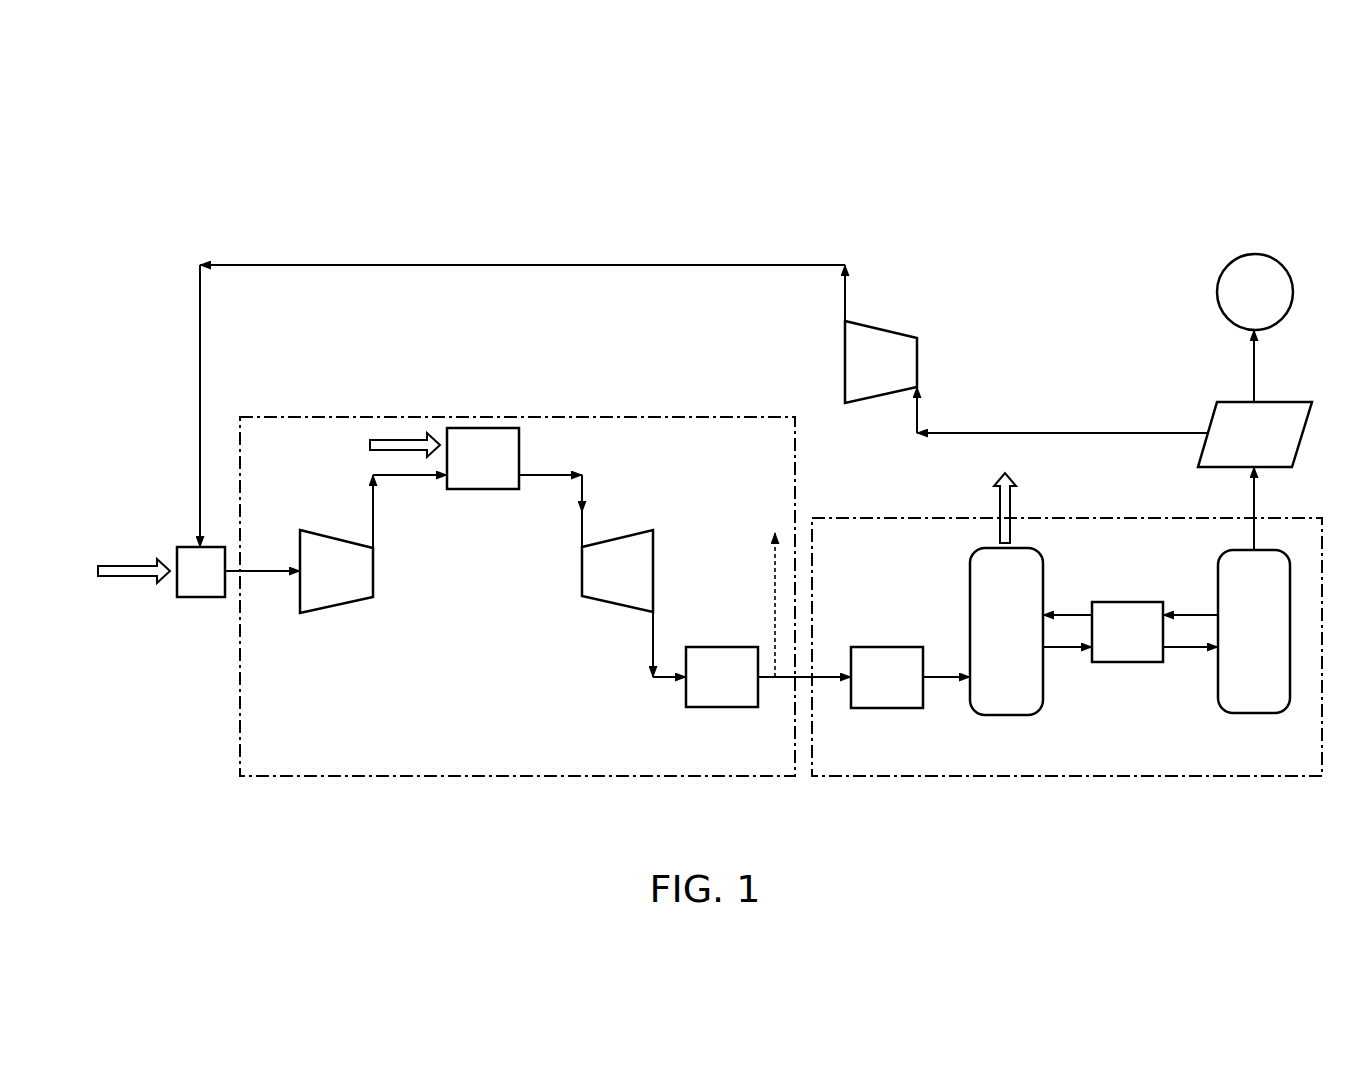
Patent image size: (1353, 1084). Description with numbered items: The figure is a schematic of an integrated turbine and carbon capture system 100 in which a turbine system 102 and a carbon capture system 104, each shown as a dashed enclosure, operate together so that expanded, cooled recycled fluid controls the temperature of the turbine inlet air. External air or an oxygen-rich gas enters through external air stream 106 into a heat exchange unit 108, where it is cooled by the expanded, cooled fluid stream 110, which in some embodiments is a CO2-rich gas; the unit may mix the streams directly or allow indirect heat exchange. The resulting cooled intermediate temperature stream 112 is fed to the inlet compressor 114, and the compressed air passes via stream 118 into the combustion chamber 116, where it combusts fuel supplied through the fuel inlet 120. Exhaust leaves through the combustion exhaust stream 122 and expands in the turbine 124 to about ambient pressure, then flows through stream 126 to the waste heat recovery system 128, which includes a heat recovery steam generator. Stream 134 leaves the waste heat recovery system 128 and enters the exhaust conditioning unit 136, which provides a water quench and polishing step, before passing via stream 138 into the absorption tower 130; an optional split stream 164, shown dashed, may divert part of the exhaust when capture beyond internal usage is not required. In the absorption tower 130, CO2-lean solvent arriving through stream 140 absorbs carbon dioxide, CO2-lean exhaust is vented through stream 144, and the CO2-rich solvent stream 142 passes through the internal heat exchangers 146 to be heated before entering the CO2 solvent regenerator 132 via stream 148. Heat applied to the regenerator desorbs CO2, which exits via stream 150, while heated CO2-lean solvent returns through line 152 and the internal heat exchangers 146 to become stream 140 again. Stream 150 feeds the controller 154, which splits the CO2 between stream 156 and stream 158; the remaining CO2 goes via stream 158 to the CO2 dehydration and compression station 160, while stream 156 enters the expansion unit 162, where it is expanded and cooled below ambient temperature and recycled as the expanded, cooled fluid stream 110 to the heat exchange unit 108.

The integrated turbine and carbon capture system 100 is at (1182, 130).
The turbine system 102 is at (345, 417).
The carbon capture system 104 is at (900, 518).
The external air stream 106 is at (148, 562).
The heat exchange unit 108 is at (203, 598).
The expanded, cooled fluid stream 110 is at (200, 313).
The cooled intermediate temperature stream 112 is at (265, 572).
The inlet compressor 114 is at (311, 587).
The combustion chamber 116 is at (461, 472).
The stream 118 is at (405, 478).
The fuel inlet 120 is at (370, 447).
The combustion exhaust stream 122 is at (545, 478).
The turbine 124 is at (595, 587).
The stream 126 is at (653, 640).
The waste heat recovery system 128 is at (700, 692).
The absorption tower 130 is at (984, 635).
The CO2 solvent regenerator 132 is at (1232, 635).
The stream 134 is at (828, 678).
The exhaust conditioning unit 136 is at (865, 692).
The stream 138 is at (944, 678).
The CO2-lean solvent stream 140 is at (1073, 614).
The CO2-rich solvent stream 142 is at (1060, 648).
The vent stream 144 is at (1011, 500).
The internal heat exchangers 146 is at (1105, 647).
The stream 148 is at (1190, 648).
The stream 150 is at (1253, 508).
The line 152 is at (1193, 614).
The controller 154 is at (1233, 448).
The stream 156 is at (1010, 433).
The stream 158 is at (1253, 372).
The CO2 dehydration and compression station 160 is at (1233, 307).
The expansion unit 162 is at (858, 375).
The optional split stream 164 is at (775, 572).